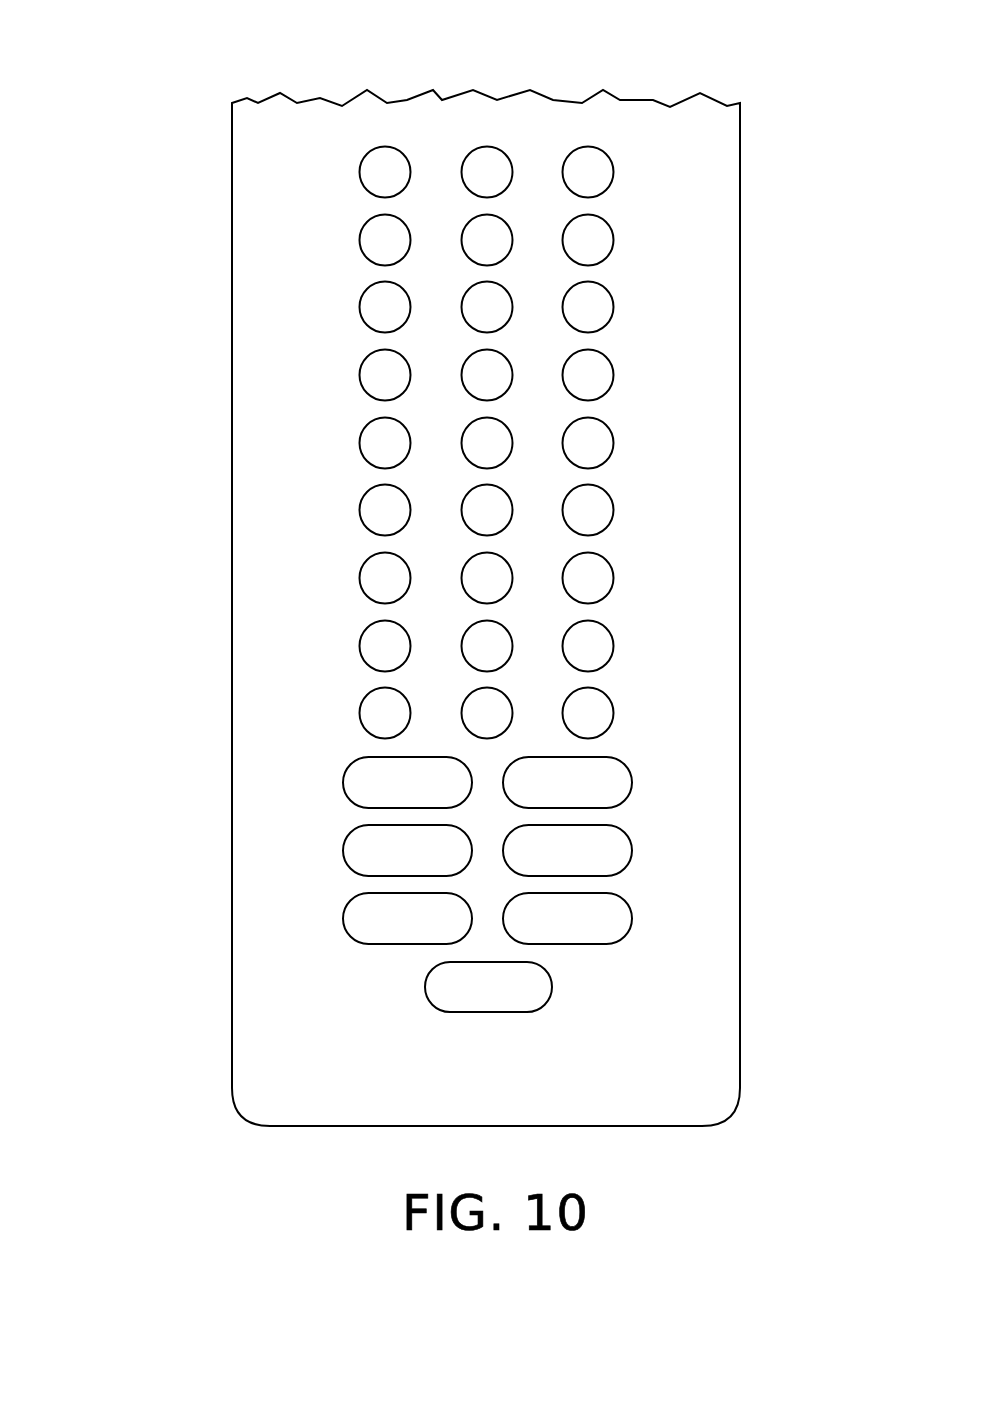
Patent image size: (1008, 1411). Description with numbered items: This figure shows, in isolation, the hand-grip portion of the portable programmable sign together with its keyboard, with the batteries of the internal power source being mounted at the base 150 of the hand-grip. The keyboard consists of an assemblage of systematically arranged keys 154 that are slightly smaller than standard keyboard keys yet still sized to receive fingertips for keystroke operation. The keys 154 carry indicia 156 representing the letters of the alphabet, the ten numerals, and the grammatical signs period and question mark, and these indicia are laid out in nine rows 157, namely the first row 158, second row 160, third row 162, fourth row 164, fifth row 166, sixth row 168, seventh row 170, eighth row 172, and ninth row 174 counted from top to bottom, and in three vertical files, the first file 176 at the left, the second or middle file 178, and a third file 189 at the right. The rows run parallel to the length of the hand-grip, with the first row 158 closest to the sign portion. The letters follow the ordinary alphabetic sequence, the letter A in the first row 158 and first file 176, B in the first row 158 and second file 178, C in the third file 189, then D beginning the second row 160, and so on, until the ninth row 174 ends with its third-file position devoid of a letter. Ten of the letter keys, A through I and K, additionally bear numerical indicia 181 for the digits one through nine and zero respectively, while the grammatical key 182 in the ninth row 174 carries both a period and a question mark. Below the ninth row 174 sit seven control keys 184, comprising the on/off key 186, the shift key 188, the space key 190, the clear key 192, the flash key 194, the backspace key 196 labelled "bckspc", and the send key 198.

The base 150 is at (617, 1127).
The keys 154 is at (123, 146).
The indicia 156 is at (212, 145).
The rows 157 is at (836, 143).
The first row 158 is at (755, 145).
The second row 160 is at (755, 213).
The third row 162 is at (755, 280).
The fourth row 164 is at (755, 348).
The fifth row 166 is at (755, 416).
The sixth row 168 is at (755, 483).
The seventh row 170 is at (755, 551).
The eighth row 172 is at (755, 619).
The ninth row 174 is at (594, 705).
The first file 176 is at (359, 72).
The second file 178 is at (461, 72).
The third column of keys 189 is at (562, 72).
The numerical indicia 181 is at (397, 149).
The grammatical key 182 is at (604, 697).
The control keys 184 is at (212, 757).
The on/off key 186 is at (487, 1012).
The shift key 188 is at (352, 764).
The space key 190 is at (623, 764).
The clear key 192 is at (352, 832).
The flash key 194 is at (623, 832).
The backspace key 196 is at (623, 900).
The send key 198 is at (352, 900).